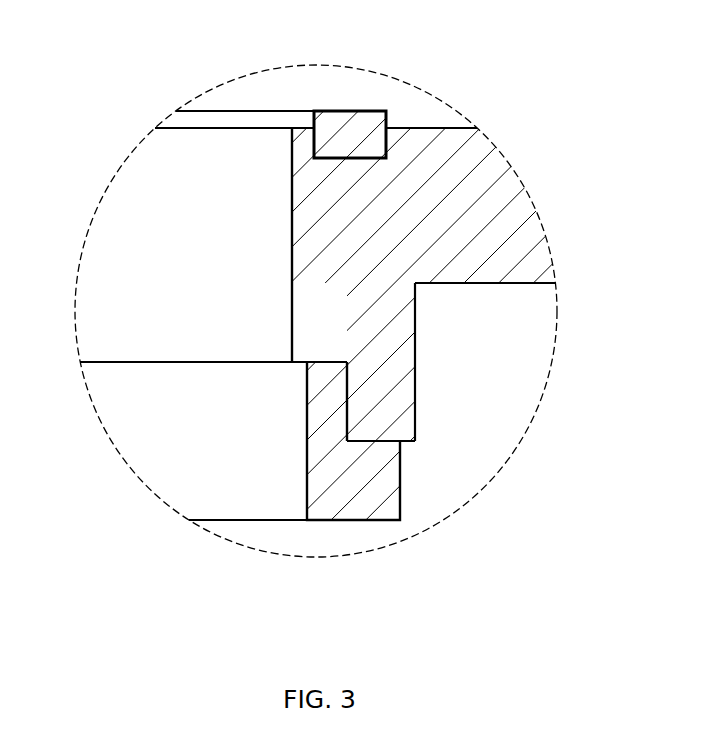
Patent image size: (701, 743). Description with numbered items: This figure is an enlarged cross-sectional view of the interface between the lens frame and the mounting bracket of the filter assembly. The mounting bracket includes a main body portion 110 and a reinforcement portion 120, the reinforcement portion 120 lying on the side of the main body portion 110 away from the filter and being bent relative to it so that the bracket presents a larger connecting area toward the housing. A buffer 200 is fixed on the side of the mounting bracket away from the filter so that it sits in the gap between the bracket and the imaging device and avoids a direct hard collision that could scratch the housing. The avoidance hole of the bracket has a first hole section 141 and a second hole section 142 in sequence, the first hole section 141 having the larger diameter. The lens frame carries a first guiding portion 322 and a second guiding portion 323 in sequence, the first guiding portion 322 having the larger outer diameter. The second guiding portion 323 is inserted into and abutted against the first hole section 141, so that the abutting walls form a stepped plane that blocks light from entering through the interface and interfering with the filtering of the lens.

The main body portion 110 is at (367, 313).
The reinforcement portion 120 is at (497, 210).
The first hole section 141 is at (350, 390).
The second hole section 142 is at (292, 245).
The buffer 200 is at (350, 130).
The first guiding portion 322 is at (340, 490).
The second guiding portion 323 is at (333, 400).